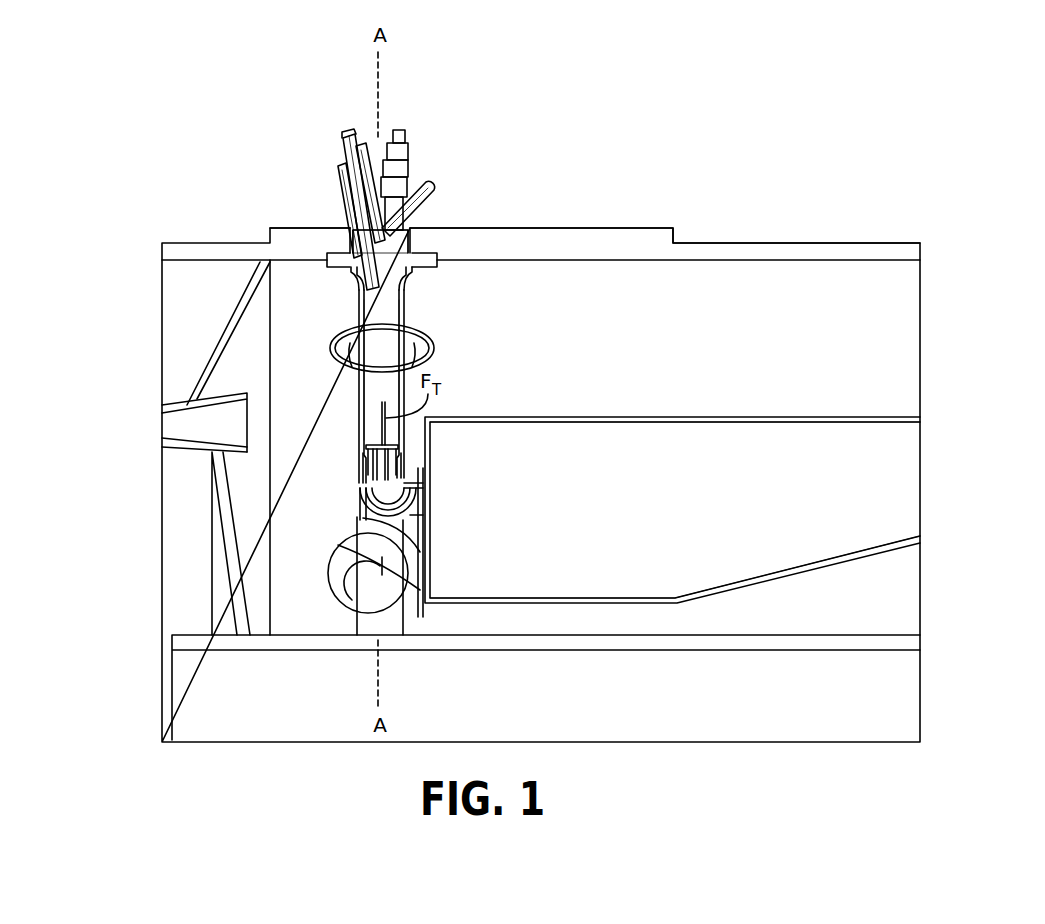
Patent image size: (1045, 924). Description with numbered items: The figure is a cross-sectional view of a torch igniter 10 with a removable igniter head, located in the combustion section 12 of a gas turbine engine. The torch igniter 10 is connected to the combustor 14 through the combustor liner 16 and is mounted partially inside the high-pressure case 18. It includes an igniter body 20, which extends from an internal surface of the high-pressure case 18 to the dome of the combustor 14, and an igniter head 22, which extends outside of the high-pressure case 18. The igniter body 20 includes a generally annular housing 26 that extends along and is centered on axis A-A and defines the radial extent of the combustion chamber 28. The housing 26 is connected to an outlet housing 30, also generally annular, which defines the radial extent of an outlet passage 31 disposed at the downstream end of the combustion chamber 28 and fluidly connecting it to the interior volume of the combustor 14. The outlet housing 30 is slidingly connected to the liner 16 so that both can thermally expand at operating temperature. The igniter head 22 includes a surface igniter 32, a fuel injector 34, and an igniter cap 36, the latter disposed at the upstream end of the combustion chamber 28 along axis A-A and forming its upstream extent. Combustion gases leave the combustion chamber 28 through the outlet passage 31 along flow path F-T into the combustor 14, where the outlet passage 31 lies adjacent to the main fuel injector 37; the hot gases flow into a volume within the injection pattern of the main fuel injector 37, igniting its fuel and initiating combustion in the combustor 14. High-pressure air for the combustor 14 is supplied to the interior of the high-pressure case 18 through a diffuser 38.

The torch igniter 10 is at (452, 125).
The combustion section 12 is at (108, 243).
The combustor 14 is at (670, 515).
The combustor liner 16 is at (652, 417).
The high-pressure case 18 is at (702, 243).
The igniter body 20 is at (425, 350).
The igniter head 22 is at (315, 172).
The housing 26 is at (358, 408).
The combustion chamber 28 is at (391, 346).
The outlet housing 30 is at (360, 472).
The outlet passage 31 is at (368, 492).
The surface igniter 32 is at (350, 130).
The fuel injector 34 is at (408, 175).
The igniter cap 36 is at (400, 242).
The main fuel injector 37 is at (358, 603).
The diffuser 38 is at (232, 432).